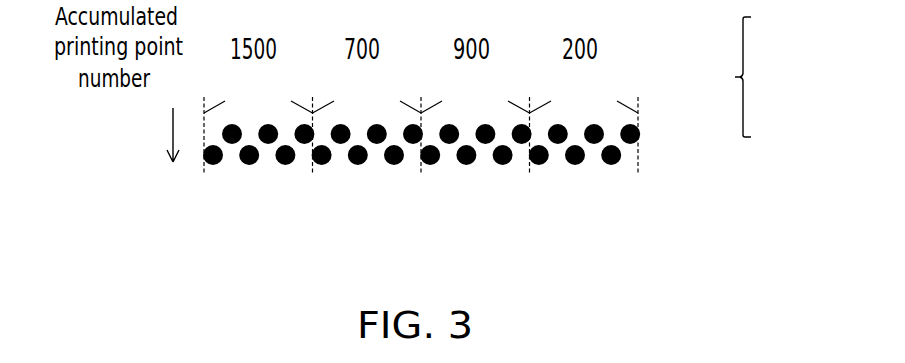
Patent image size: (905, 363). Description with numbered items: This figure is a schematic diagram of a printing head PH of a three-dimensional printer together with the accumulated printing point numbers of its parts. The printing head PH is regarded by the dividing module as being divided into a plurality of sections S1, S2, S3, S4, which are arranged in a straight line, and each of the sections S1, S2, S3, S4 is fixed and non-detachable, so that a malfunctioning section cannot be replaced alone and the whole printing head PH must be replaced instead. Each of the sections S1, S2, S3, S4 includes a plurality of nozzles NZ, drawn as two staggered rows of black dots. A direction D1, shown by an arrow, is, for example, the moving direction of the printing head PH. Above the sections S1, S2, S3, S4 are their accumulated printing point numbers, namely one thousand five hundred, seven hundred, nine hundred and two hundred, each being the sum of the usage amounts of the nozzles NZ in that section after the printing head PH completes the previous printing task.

The section S1 is at (269, 128).
The section S2 is at (397, 128).
The section S3 is at (507, 128).
The section S4 is at (605, 128).
The printing head PH is at (741, 76).
The nozzle NZ is at (610, 165).
The direction D1 is at (159, 135).